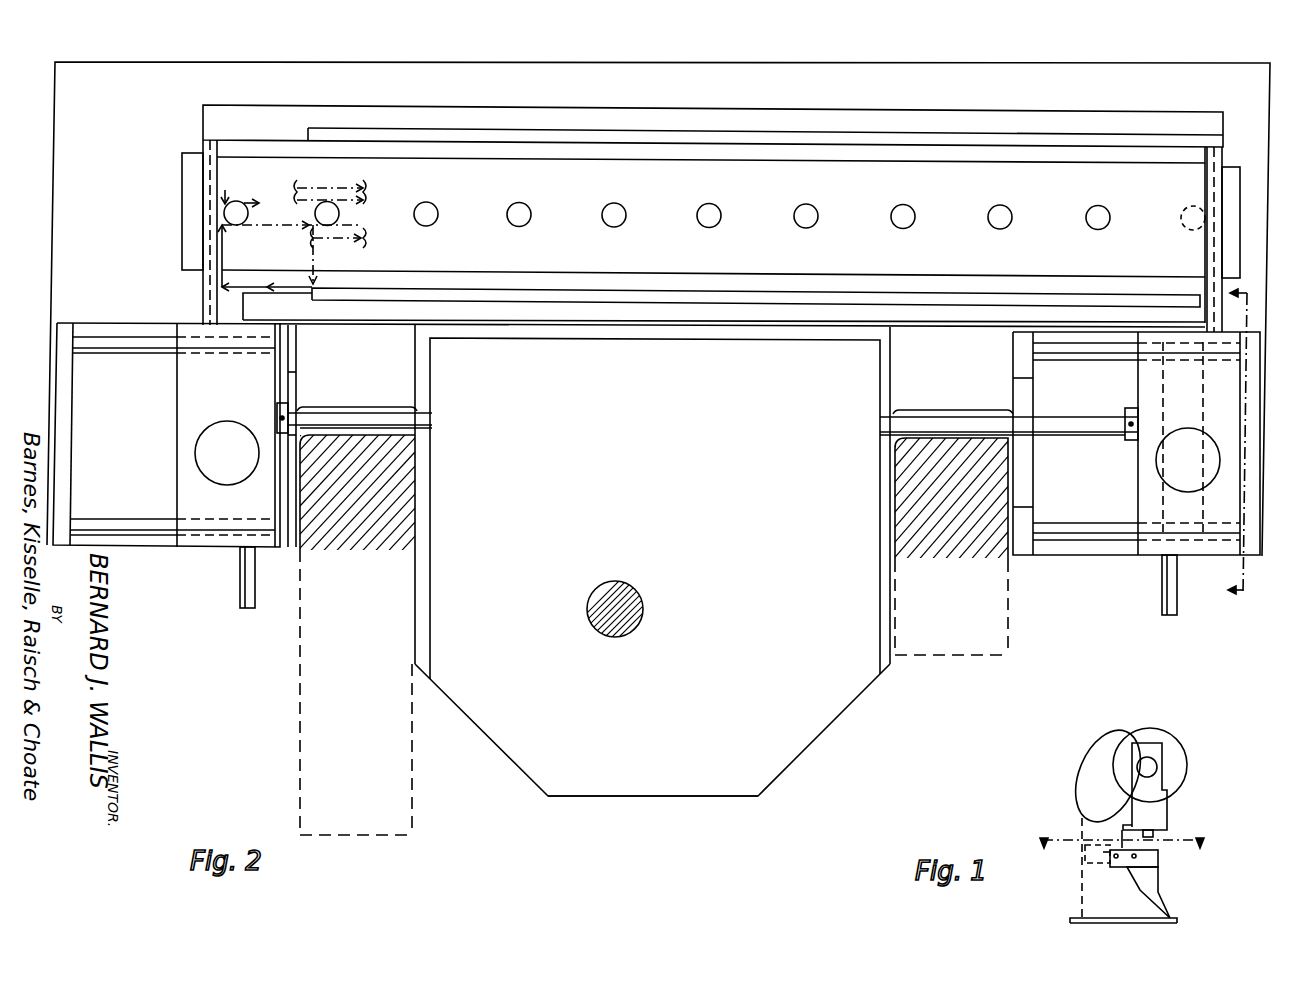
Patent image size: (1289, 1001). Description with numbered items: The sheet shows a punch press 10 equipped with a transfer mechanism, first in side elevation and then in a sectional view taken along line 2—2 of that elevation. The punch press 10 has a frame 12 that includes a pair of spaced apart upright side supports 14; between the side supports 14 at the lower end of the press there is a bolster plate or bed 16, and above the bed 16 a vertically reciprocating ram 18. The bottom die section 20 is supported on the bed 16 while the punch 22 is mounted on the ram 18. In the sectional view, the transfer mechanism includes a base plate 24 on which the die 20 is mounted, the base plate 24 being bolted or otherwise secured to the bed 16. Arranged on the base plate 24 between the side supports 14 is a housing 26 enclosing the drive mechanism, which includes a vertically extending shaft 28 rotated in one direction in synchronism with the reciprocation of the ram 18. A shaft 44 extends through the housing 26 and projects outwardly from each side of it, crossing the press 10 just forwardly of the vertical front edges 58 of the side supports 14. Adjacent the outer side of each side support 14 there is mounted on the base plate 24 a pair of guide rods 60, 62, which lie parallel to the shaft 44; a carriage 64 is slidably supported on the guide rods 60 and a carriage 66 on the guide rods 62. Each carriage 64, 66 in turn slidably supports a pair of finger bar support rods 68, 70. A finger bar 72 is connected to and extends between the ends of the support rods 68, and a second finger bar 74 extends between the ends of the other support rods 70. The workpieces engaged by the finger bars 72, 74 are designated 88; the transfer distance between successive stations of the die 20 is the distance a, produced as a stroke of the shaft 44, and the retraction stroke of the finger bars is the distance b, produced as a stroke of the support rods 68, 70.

In FIG. 1, the punch press 10 is at (1190, 760).
In FIG. 2, the frame 12 is at (1249, 448).
In FIG. 1, the frame 12 is at (1150, 910).
In FIG. 2, the upright side supports 14 is at (408, 795).
In FIG. 1, the upright side supports 14 is at (1092, 826).
In FIG. 1, the bolster plate or bed 16 is at (1155, 888).
In FIG. 1, the ram 18 is at (1165, 812).
In FIG. 2, the bottom die section 20 is at (186, 221).
In FIG. 1, the bottom die section 20 is at (1158, 862).
In FIG. 1, the punch 22 is at (1152, 837).
In FIG. 2, the base plate 24 is at (62, 187).
In FIG. 2, the housing 26 is at (679, 796).
In FIG. 2, the vertically extending shaft 28 is at (638, 597).
In FIG. 2, the shaft 44 is at (382, 414).
In FIG. 2, the vertical front edges 58 is at (342, 442).
In FIG. 2, the guide rods 60 is at (104, 352).
In FIG. 2, the guide rods 62 is at (1080, 356).
In FIG. 2, the carriage 64 is at (177, 421).
In FIG. 2, the carriage 66 is at (1138, 465).
In FIG. 2, the finger bar support rods 68 is at (240, 587).
In FIG. 2, the finger bar support rods 70 is at (207, 297).
In FIG. 2, the finger bar 72 is at (631, 285).
In FIG. 2, the second finger bar 74 is at (713, 115).
In FIG. 2, the workpieces 88 is at (430, 206).
In FIG. 1, the section line 2— 2 is at (1125, 854).